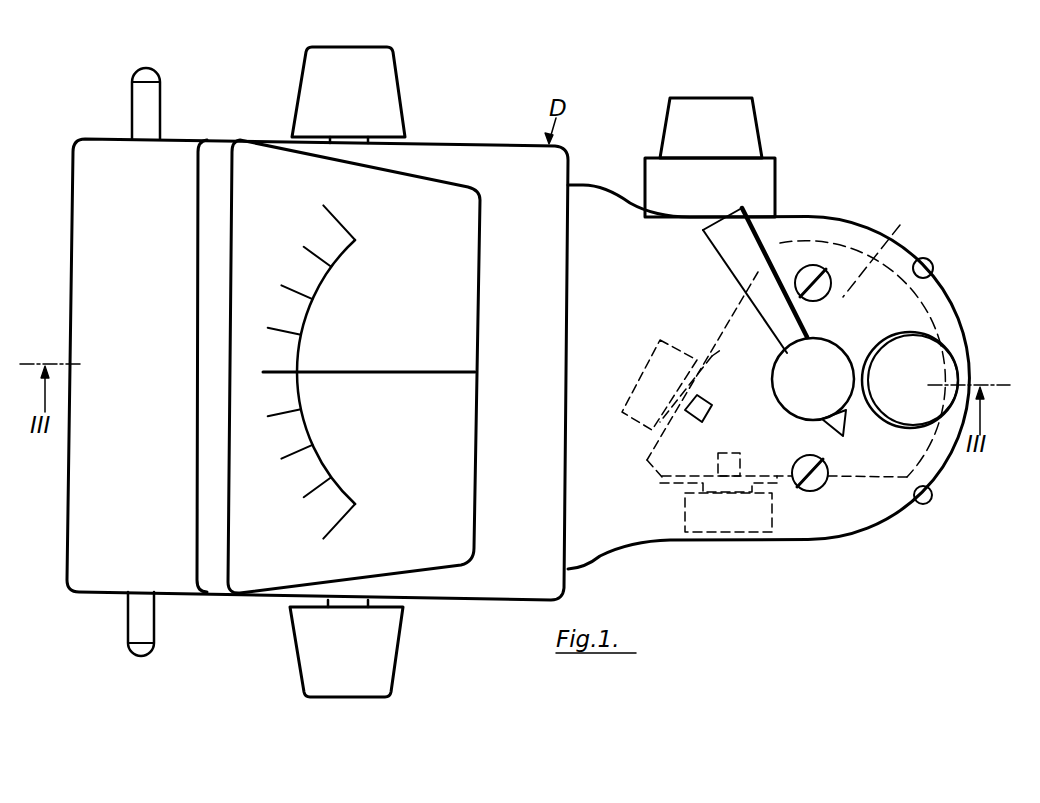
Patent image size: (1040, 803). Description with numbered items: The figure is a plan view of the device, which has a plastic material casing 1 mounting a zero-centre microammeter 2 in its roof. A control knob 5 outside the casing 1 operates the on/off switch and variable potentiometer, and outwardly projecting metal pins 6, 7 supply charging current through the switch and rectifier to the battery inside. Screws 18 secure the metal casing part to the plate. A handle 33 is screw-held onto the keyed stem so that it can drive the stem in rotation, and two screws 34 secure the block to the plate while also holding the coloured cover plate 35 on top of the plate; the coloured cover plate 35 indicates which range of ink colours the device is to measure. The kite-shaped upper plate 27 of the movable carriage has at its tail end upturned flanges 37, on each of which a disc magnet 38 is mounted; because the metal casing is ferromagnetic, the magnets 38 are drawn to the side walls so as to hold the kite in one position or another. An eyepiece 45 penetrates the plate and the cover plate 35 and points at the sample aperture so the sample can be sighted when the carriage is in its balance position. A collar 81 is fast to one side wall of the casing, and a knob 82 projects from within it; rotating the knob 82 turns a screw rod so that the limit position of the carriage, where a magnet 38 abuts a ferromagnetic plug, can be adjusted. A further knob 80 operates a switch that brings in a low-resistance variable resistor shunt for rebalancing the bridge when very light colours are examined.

The casing 1 is at (508, 604).
The zero-centre microammeter 2 is at (452, 530).
The control knob 5 is at (357, 107).
The metal pin 6 is at (141, 652).
The metal pin 7 is at (138, 105).
The screws 18 is at (926, 258).
The upper plate 27 is at (883, 248).
The handle 33 is at (736, 262).
The screws 34 is at (804, 292).
The coloured cover plate 35 is at (626, 263).
The upturned flanges 37 is at (676, 487).
The disc magnet 38 is at (658, 370).
The eyepiece 45 is at (900, 390).
The knob 80 is at (298, 621).
The collar 81 is at (730, 196).
The knob 82 is at (722, 142).